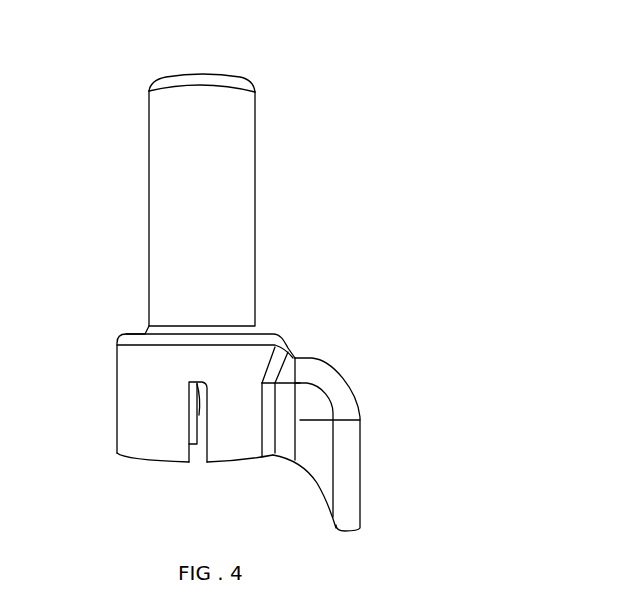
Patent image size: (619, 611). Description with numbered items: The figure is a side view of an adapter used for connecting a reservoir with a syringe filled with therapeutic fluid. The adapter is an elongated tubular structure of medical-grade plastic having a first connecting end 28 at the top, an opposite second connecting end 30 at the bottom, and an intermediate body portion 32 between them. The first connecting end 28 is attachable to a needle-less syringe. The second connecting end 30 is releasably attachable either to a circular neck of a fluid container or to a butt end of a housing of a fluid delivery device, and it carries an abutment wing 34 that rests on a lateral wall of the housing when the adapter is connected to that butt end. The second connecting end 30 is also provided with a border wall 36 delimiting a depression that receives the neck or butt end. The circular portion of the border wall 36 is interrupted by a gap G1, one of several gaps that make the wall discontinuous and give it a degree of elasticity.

The first connecting end 28 is at (203, 80).
The second connecting end 30 is at (218, 428).
The intermediate body portion 32 is at (251, 169).
The abutment wing 34 is at (348, 413).
The border wall 36 is at (133, 442).
The gap G1 is at (199, 455).